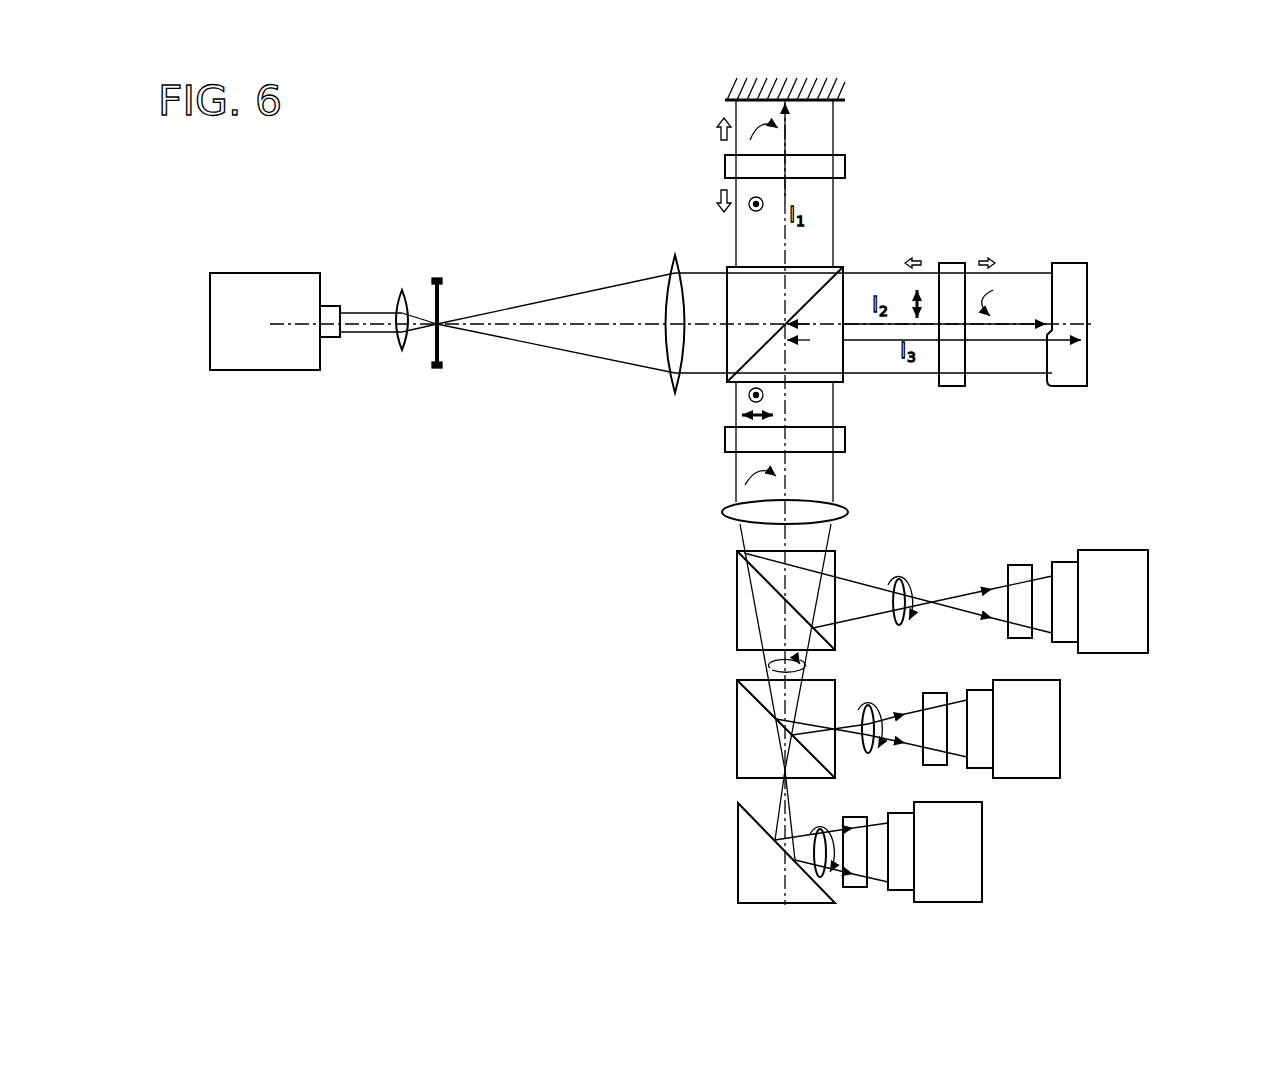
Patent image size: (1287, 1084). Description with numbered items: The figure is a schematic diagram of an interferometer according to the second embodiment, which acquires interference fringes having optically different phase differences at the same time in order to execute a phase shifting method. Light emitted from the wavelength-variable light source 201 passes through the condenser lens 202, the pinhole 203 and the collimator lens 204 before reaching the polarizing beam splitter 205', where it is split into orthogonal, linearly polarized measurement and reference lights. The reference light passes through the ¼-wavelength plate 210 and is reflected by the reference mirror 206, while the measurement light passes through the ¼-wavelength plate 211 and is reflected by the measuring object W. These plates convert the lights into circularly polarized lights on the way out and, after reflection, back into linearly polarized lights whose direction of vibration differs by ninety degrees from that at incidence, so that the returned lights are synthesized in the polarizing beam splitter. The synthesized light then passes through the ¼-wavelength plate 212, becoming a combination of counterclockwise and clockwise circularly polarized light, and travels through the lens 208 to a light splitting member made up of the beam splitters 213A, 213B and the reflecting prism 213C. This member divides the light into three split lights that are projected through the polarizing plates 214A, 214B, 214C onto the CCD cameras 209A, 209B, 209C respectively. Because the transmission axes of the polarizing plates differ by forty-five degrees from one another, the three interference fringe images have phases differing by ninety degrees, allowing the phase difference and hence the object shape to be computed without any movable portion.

The wavelength-variable light source 201 is at (262, 372).
The condenser lens 202 is at (404, 354).
The pinhole 203 is at (450, 348).
The collimator lens 204 is at (676, 254).
The polarizing beam splitter 205' is at (821, 339).
The reference mirror 206 is at (818, 101).
The lens 208 is at (722, 512).
The CCD camera 209A is at (1148, 600).
The CCD camera 209B is at (1060, 728).
The CCD camera 209C is at (982, 852).
The ¼-wavelength plate 210 is at (845, 168).
The ¼-wavelength plate 211 is at (950, 388).
The ¼-wavelength plate 212 is at (725, 440).
The beam splitter 213A is at (737, 602).
The beam splitter 213B is at (737, 728).
The reflecting prism 213C is at (738, 860).
The polarizing plate 214A is at (1022, 563).
The polarizing plate 214B is at (936, 692).
The polarizing plate 214C is at (856, 888).
The measuring object W is at (1068, 388).